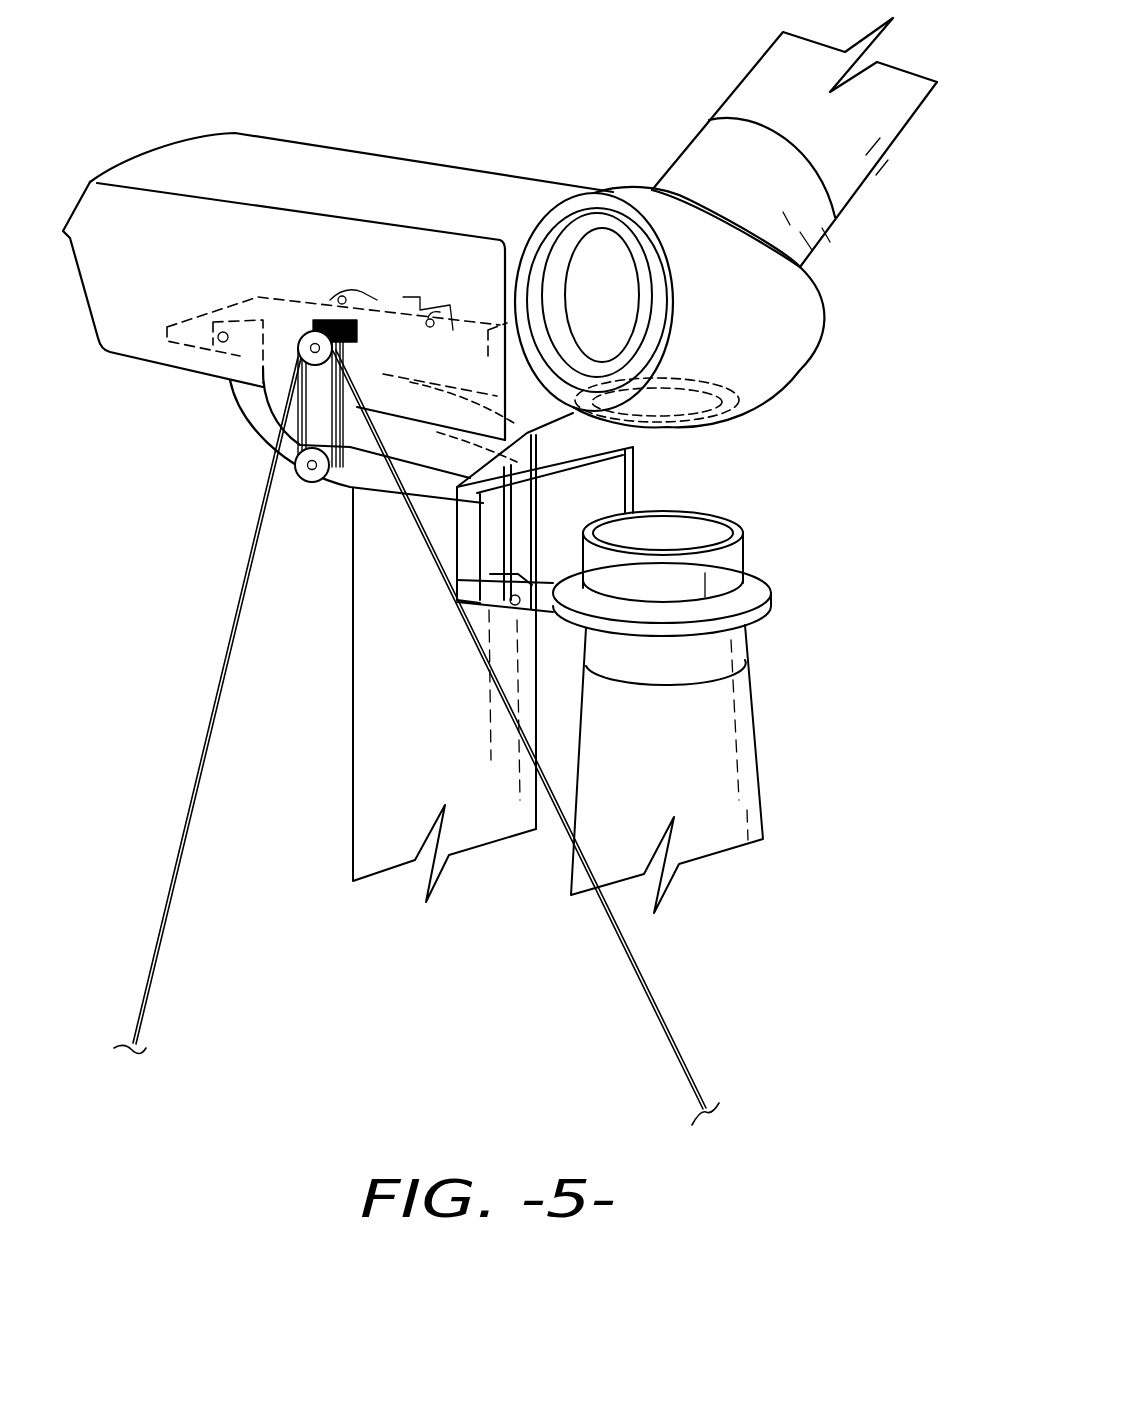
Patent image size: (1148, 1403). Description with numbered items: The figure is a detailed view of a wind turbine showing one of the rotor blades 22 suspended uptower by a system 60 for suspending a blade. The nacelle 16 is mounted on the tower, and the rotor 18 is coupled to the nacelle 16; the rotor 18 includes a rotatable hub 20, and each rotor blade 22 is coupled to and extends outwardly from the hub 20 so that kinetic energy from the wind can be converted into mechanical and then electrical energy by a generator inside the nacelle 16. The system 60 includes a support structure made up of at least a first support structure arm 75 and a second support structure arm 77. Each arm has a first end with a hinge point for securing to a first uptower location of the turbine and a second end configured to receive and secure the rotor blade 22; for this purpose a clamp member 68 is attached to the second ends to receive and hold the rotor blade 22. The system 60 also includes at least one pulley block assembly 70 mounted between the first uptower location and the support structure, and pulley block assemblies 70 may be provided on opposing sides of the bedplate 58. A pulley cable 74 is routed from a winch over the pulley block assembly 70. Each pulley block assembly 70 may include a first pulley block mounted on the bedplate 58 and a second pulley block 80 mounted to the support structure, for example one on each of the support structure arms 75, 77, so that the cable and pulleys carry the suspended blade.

The nacelle 16 is at (307, 163).
The rotor 18 is at (823, 282).
The rotatable hub 20 is at (790, 320).
The rotor blade 22 is at (755, 88).
The bedplate 58 is at (177, 340).
The system 60 is at (741, 505).
The clamp member 68 is at (753, 573).
The pulley block assembly 70 is at (363, 363).
The pulley cable 74 is at (307, 337).
The first support structure arm 75 is at (260, 407).
The second support structure arm 77 is at (600, 430).
The second pulley block 80 is at (312, 475).